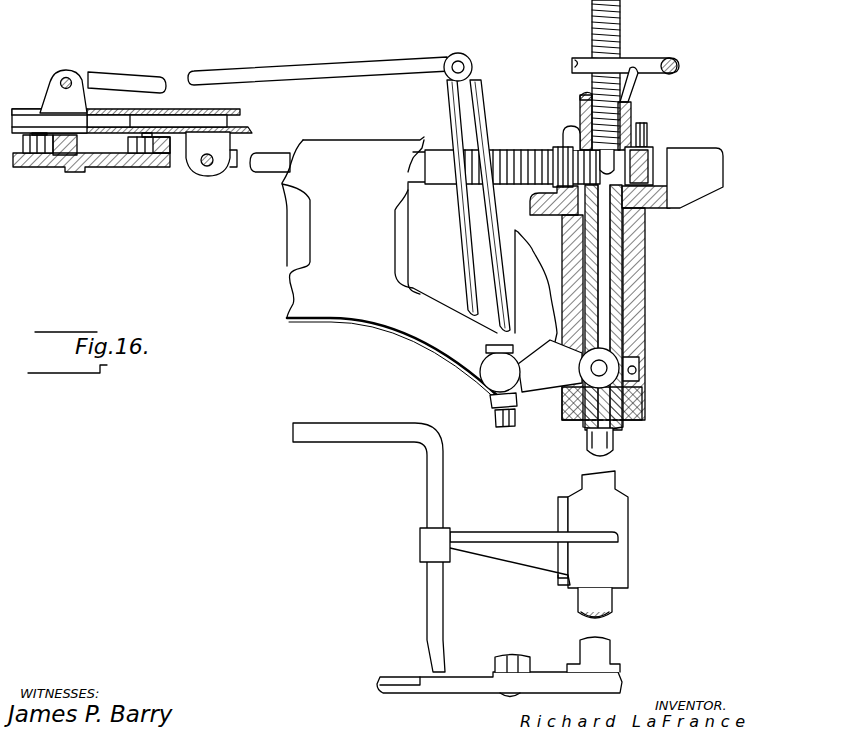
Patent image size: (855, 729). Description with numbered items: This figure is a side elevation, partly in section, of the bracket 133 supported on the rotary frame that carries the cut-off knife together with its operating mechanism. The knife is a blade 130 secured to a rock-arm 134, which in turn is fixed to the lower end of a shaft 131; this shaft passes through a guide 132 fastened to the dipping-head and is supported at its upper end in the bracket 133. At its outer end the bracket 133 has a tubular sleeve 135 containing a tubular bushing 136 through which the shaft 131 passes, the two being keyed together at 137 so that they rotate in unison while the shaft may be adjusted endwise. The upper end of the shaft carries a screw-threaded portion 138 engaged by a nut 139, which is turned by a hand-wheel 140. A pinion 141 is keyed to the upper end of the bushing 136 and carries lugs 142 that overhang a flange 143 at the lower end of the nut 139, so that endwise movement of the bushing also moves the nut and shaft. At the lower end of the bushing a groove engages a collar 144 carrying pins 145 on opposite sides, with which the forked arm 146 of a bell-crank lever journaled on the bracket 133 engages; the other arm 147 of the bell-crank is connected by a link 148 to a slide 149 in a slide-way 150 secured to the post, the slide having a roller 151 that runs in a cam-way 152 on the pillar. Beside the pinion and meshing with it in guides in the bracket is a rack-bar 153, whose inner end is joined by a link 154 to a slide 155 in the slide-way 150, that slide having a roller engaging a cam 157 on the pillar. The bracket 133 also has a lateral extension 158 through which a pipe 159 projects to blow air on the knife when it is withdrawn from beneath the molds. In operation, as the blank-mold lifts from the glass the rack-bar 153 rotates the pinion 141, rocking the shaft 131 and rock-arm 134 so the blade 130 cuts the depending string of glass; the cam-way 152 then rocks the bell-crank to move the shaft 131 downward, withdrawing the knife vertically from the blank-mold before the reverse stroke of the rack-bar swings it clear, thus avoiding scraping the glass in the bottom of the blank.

The blade 130 is at (388, 676).
The shaft 131 is at (615, 444).
The guide 132 is at (636, 501).
The bracket 133 is at (378, 327).
The rock-arm 134 is at (468, 694).
The tubular sleeve 135 is at (647, 303).
The tubular bushing 136 is at (152, 165).
The key 137 is at (613, 333).
The screw-threaded portion 138 is at (622, 28).
The nut 139 is at (636, 115).
The hand-wheel 140 is at (678, 63).
The pinion 141 is at (640, 163).
The lugs 142 is at (567, 145).
The flange 143 is at (580, 137).
The collar 144 is at (640, 364).
The pins 145 is at (640, 397).
The forked arm 146 is at (541, 392).
The arm 147 is at (462, 228).
The link 148 is at (314, 63).
The slide 149 is at (33, 108).
The slide-way 150 is at (38, 116).
The roller 151 is at (38, 167).
The cam-way 152 is at (70, 168).
The rack-bar 153 is at (491, 143).
The link 154 is at (266, 162).
The slide 155 is at (160, 120).
The cam 157 is at (166, 164).
The lateral extension 158 is at (523, 561).
The pipe 159 is at (447, 485).